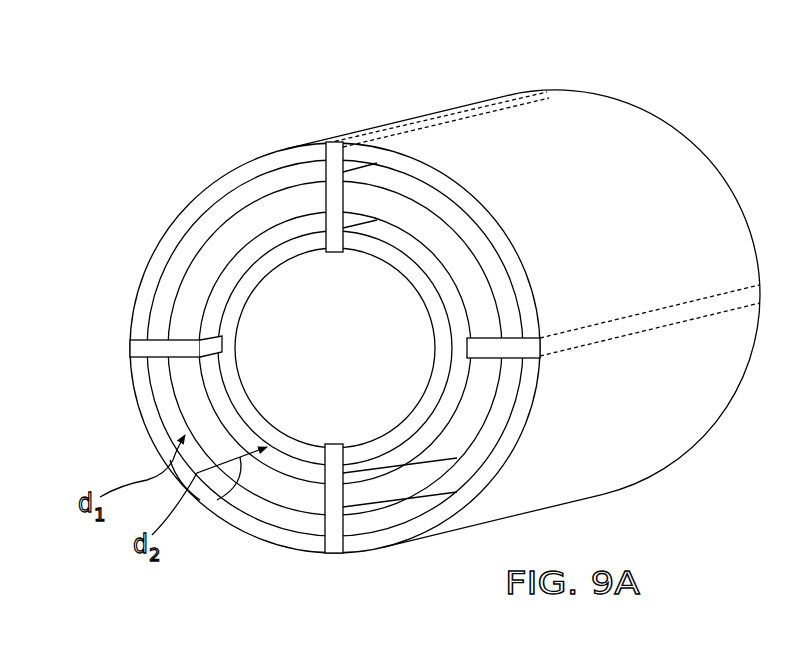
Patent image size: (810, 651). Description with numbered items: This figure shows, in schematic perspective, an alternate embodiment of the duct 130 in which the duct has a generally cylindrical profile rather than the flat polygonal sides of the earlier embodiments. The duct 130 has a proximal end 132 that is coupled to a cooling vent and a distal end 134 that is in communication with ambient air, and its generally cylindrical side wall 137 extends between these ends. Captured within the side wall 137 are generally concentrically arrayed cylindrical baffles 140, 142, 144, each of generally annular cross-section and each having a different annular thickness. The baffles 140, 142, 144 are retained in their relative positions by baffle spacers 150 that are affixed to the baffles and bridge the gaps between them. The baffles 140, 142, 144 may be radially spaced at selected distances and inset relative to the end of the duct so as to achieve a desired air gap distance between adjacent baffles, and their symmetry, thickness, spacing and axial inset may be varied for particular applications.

The duct 130 is at (685, 105).
The proximal end 132 is at (635, 105).
The distal end 134 is at (142, 406).
The cylindrical side wall 137 is at (648, 450).
The cylindrical baffle 140 is at (513, 262).
The cylindrical baffle 142 is at (428, 232).
The cylindrical baffle 144 is at (428, 308).
The baffle spacer 150 is at (335, 182).